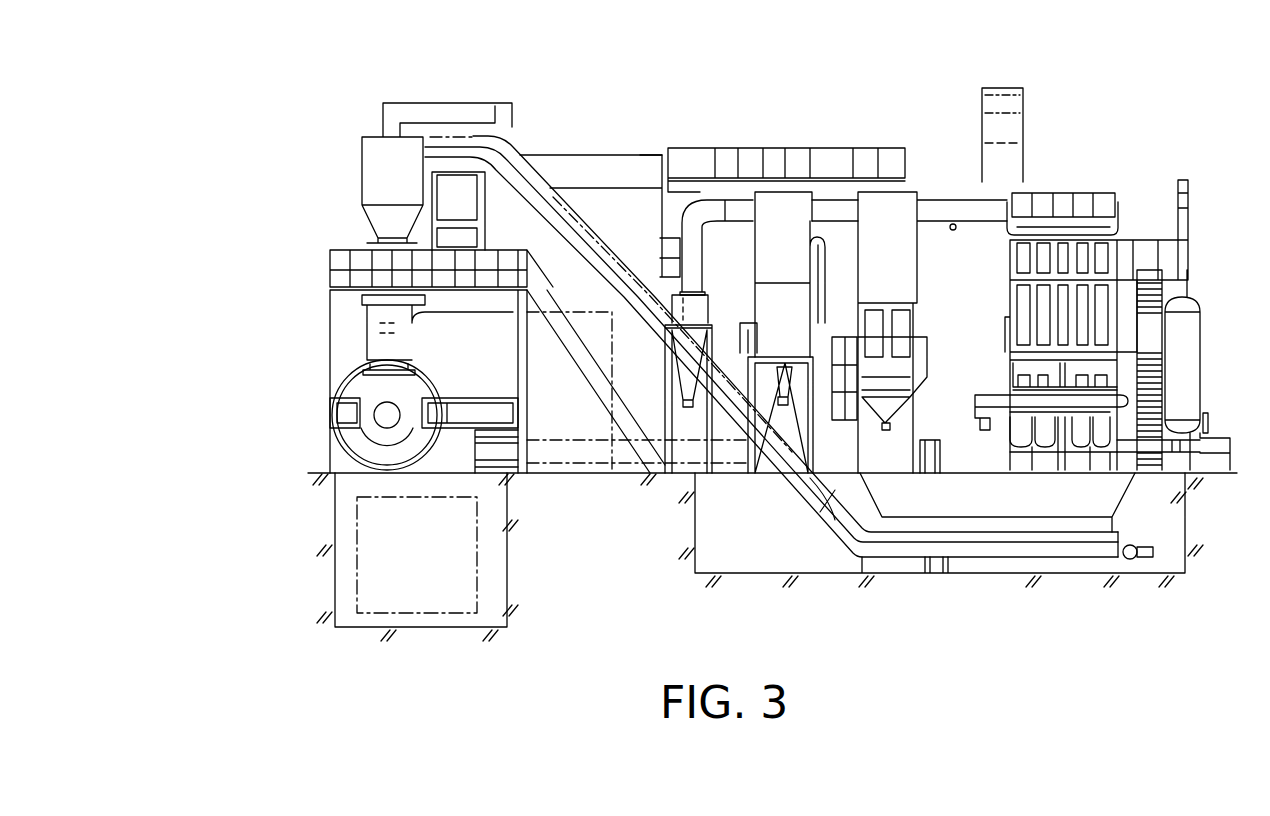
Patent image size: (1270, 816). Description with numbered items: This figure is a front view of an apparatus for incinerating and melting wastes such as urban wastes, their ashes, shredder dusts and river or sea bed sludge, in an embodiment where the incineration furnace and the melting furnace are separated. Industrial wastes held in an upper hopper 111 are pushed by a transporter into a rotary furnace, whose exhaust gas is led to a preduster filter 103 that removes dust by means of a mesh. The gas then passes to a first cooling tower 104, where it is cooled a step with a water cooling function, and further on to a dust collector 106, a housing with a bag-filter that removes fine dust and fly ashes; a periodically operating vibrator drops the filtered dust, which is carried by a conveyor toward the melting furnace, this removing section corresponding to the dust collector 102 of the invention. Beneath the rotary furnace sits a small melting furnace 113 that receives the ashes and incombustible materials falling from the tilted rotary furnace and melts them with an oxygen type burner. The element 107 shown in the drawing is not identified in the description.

The dust collector 102 is at (838, 83).
The preduster filter 103 is at (690, 373).
The first cooling tower 104 is at (777, 207).
The dust collector 106 is at (1085, 176).
The conveyor 107 is at (1062, 553).
The upper hopper 111 is at (377, 162).
The melting furnace 113 is at (357, 580).